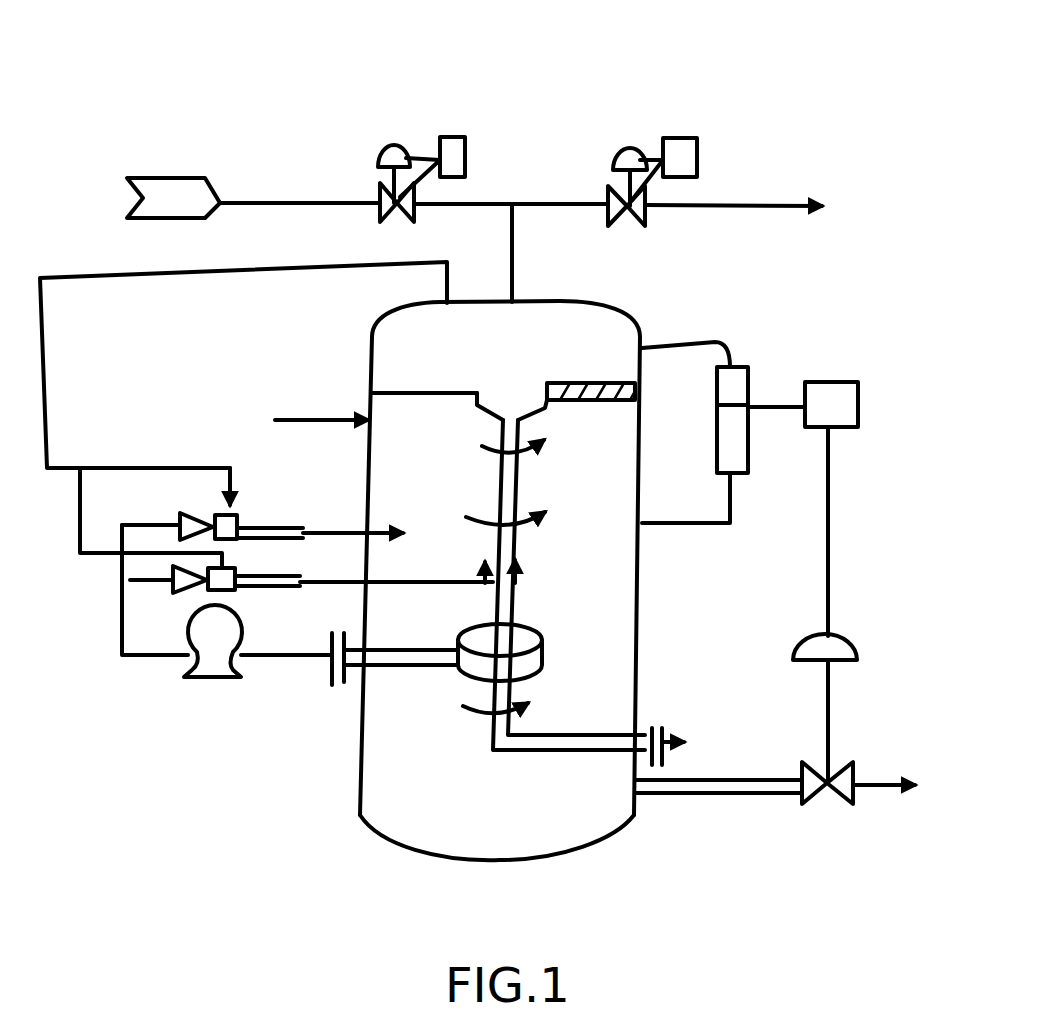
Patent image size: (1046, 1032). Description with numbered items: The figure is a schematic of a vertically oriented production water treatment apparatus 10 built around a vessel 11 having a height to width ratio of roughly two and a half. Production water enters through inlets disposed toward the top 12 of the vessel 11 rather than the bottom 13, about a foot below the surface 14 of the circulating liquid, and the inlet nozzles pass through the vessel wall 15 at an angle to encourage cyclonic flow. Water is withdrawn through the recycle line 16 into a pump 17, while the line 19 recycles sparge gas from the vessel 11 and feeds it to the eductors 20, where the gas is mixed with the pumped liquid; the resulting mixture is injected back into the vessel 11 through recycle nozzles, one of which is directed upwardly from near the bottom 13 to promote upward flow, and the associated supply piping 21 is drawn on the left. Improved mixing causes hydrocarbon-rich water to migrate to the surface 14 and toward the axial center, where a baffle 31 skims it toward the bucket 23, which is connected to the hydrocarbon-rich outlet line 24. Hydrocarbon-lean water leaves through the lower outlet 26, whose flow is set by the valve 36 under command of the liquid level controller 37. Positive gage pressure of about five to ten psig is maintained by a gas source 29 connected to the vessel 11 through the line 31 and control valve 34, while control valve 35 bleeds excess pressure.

The apparatus 10 is at (752, 78).
The vessel 11 is at (612, 310).
The top 12 is at (382, 330).
The bottom 13 is at (397, 840).
The surface 14 is at (413, 393).
The vessel wall 15 is at (645, 590).
The recycle line 16 is at (387, 647).
The pump 17 is at (243, 616).
The line 19 is at (43, 363).
The eductors 20 is at (240, 510).
The reagent supply piping 21 is at (120, 614).
The bucket 23 is at (483, 413).
The hydrocarbon-rich outlet line 24 is at (513, 487).
The lower outlet 26 is at (713, 776).
The gas source 29 is at (173, 178).
The line 31 is at (514, 262).
The control valve 34 is at (418, 136).
The control valve 35 is at (636, 132).
The valve 36 is at (855, 648).
The liquid level controller 37 is at (860, 400).